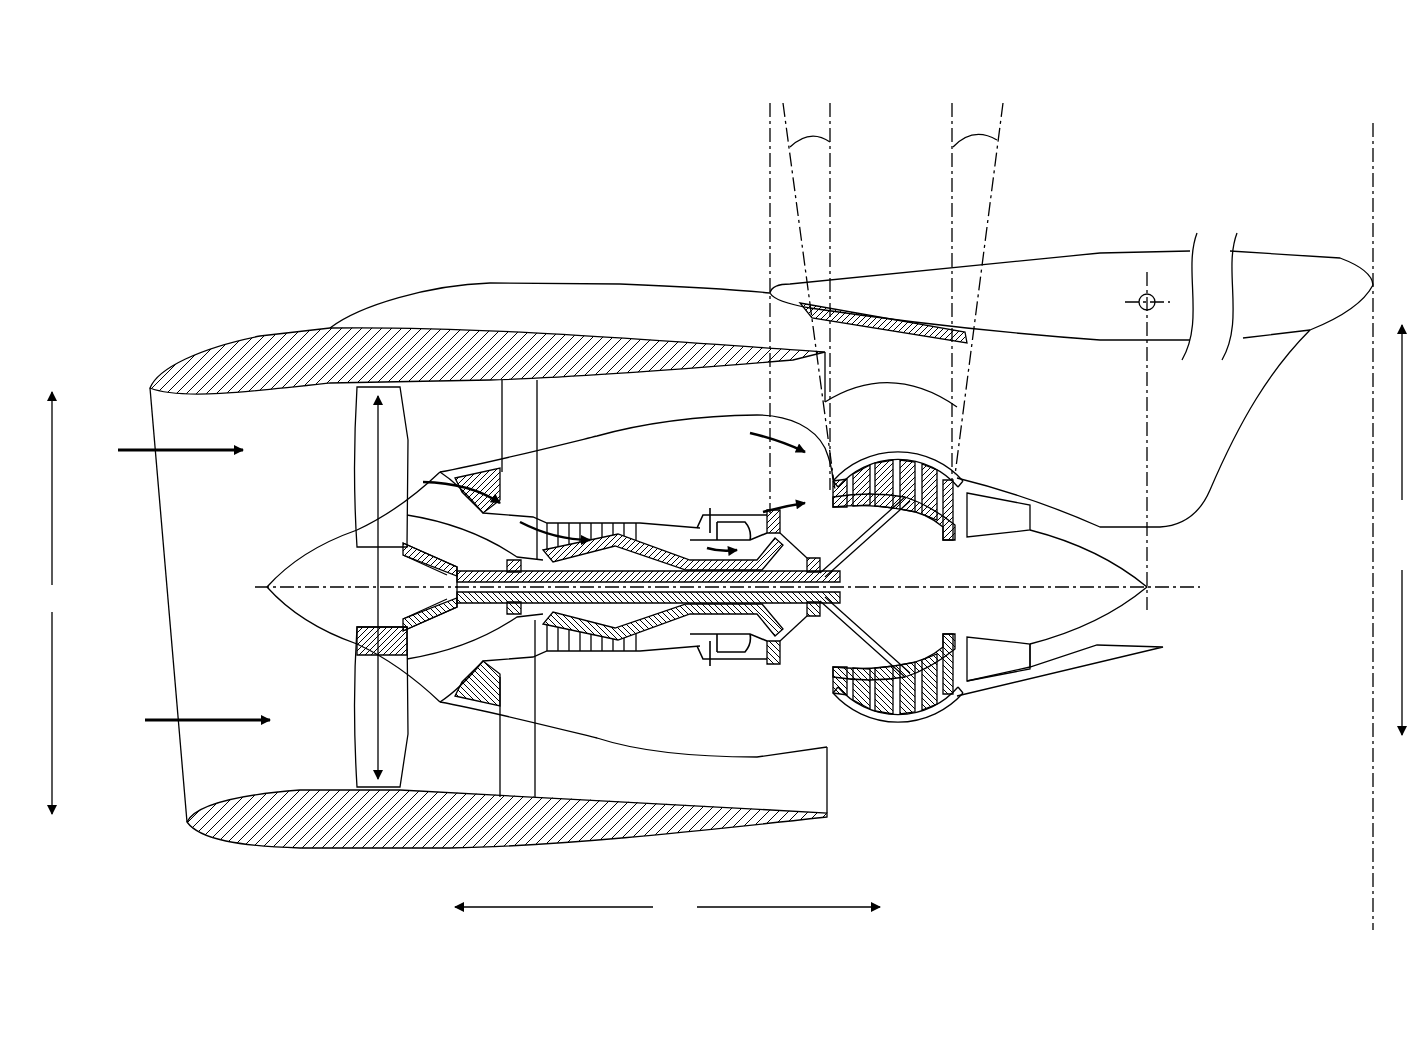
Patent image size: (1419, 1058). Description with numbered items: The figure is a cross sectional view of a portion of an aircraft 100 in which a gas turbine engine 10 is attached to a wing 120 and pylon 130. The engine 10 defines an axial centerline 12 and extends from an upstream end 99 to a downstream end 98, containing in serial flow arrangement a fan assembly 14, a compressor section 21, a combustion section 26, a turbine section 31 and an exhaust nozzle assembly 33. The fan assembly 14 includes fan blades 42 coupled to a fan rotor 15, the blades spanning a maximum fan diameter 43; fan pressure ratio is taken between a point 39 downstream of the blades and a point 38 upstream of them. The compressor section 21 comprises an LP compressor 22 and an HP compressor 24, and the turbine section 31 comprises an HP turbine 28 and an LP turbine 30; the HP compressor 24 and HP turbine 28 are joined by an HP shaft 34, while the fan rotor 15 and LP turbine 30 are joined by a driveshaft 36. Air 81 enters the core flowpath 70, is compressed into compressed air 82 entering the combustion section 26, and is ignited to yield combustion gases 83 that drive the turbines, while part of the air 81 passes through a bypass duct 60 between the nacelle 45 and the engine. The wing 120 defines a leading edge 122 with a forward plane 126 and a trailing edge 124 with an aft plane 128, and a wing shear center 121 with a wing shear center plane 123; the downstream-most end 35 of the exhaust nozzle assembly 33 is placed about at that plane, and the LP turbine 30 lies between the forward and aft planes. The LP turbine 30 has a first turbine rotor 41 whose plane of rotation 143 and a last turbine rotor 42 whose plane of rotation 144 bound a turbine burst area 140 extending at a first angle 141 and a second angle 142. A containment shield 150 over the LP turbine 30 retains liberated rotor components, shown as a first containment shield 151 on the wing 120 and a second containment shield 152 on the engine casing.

The gas turbine engine 10 is at (330, 265).
The aircraft 100 is at (575, 178).
The nacelle 45 is at (210, 355).
The point upstream of fan blades 38 is at (330, 397).
The bypass duct 60 is at (428, 400).
The point downstream of fan blades 39 is at (478, 393).
The fan blades / last turbine rotor 42 is at (367, 435).
The maximum fan diameter 43 is at (377, 742).
The core flowpath 70 is at (363, 505).
The fan rotor 15 is at (463, 557).
The fan assembly 14 is at (335, 472).
The low pressure compressor 22 is at (483, 465).
The compressor section 21 is at (595, 495).
The high pressure compressor 24 is at (612, 523).
The combustion section 26 is at (720, 500).
The high pressure turbine 28 is at (790, 510).
The HP shaft 34 is at (790, 546).
The driveshaft 36 is at (865, 530).
The containment shield 150 is at (870, 317).
The second containment shield 152 is at (905, 470).
The low pressure turbine 30 is at (940, 530).
The axial centerline 12 is at (1155, 590).
The turbine burst area 140 is at (880, 380).
The first turbine rotor 41 is at (830, 457).
The turbine section 31 is at (762, 434).
The compressed air 82 is at (700, 525).
The combustion gases 83 is at (762, 520).
The air 81 is at (183, 452).
The downstream end 98 is at (752, 593).
The upstream end 99 is at (77, 603).
The exhaust nozzle assembly 33 is at (1040, 477).
The downstream-most end 35 is at (1142, 597).
The wing 120 is at (1027, 277).
The leading edge 122 is at (768, 292).
The trailing edge 124 is at (1378, 285).
The first containment shield 151 is at (897, 327).
The wing shear center 121 is at (1137, 300).
The wing shear center plane 123 is at (1147, 430).
The pylon 130 is at (1070, 403).
The aft plane 128 is at (1373, 170).
The forward plane 126 is at (767, 208).
The plane of rotation of first turbine rotor 143 is at (833, 200).
The first angle 141 is at (810, 140).
The plane of rotation of last turbine rotor 144 is at (950, 200).
The second angle 142 is at (988, 135).